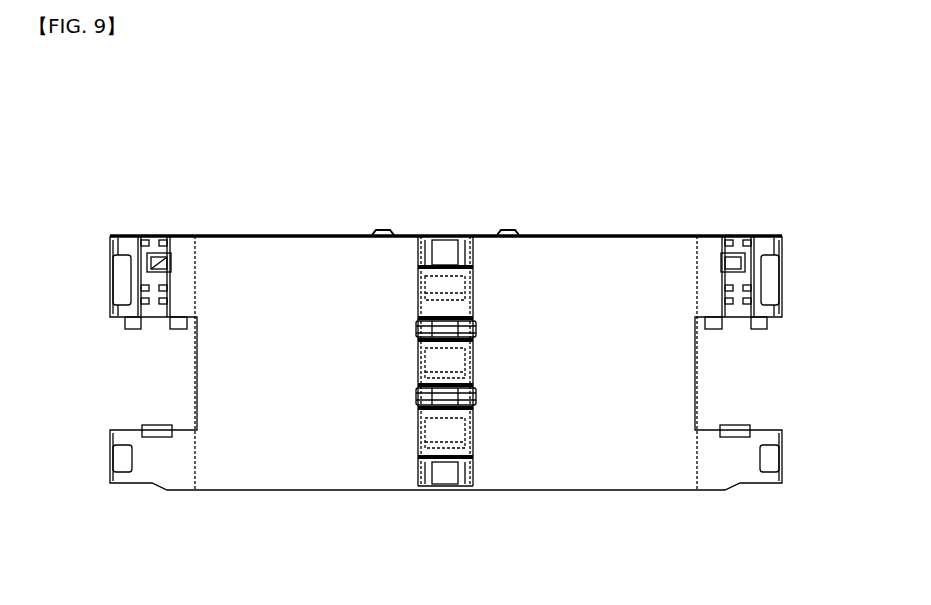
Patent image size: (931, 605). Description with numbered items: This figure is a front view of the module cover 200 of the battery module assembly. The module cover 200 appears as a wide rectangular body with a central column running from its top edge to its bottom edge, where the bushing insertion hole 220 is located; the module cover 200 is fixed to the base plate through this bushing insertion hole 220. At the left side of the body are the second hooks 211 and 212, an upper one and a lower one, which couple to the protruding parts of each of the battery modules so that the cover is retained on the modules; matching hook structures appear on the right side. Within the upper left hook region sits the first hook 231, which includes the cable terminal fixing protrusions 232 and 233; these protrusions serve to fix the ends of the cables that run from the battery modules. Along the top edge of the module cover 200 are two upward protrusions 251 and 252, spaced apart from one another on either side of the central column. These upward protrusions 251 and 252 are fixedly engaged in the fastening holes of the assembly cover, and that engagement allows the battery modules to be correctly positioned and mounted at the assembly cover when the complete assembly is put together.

The module cover 200 is at (176, 108).
The second hook 211 is at (100, 286).
The second hook 212 is at (100, 458).
The bushing insertion hole 220 is at (444, 498).
The first hook 231 is at (164, 265).
The cable terminal fixing protrusion 232 is at (143, 293).
The cable terminal fixing protrusion 233 is at (145, 302).
The upward protrusion 251 is at (386, 229).
The upward protrusion 252 is at (508, 229).